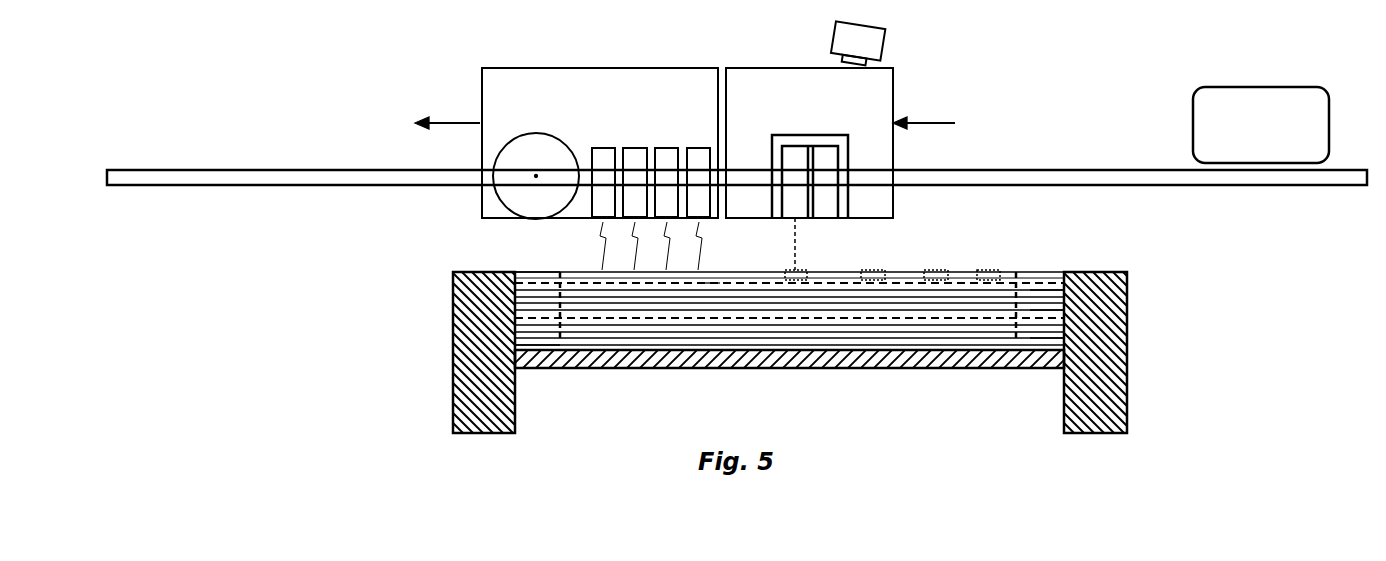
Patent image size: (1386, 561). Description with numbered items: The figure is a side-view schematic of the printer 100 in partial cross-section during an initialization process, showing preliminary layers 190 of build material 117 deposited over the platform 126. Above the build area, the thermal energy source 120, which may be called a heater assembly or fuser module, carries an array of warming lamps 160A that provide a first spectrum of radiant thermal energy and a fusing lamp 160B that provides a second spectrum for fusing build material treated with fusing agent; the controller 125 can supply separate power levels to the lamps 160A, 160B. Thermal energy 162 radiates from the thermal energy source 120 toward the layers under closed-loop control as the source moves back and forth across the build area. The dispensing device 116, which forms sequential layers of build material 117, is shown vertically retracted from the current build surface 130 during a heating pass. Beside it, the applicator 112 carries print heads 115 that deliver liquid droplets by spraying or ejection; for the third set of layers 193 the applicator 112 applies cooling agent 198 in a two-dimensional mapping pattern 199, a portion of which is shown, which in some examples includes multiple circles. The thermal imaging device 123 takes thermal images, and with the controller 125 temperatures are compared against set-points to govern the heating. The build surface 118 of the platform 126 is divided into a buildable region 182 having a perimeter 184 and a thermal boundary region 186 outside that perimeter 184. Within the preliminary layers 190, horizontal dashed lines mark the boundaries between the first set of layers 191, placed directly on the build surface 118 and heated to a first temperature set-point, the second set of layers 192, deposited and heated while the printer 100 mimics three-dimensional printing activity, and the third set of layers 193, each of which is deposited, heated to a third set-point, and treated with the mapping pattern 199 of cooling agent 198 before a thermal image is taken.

The printer 100 is at (215, 78).
The thermal energy source 120 is at (490, 103).
The dispensing device 116 is at (512, 192).
The fusing lamp 160B is at (603, 148).
The warming lamps 160A is at (698, 148).
The applicator 112 is at (883, 108).
The print heads 115 is at (790, 197).
The cooling agent 198 is at (797, 245).
The thermal imaging device 123 is at (835, 47).
The controller 125 is at (1250, 87).
The current build surface 130 is at (1005, 272).
The build surface 118 is at (585, 346).
The build material 117 is at (530, 272).
The thermal energy 162 is at (595, 233).
The mapping pattern 199 is at (882, 272).
The platform 126 is at (517, 357).
The buildable region 182 is at (572, 338).
The perimeter 184 is at (785, 377).
The thermal boundary region 186 is at (547, 338).
The preliminary layers 190 is at (703, 283).
The first set of layers 191 is at (1040, 338).
The second set of layers 192 is at (1040, 308).
The third set of layers 193 is at (1040, 279).